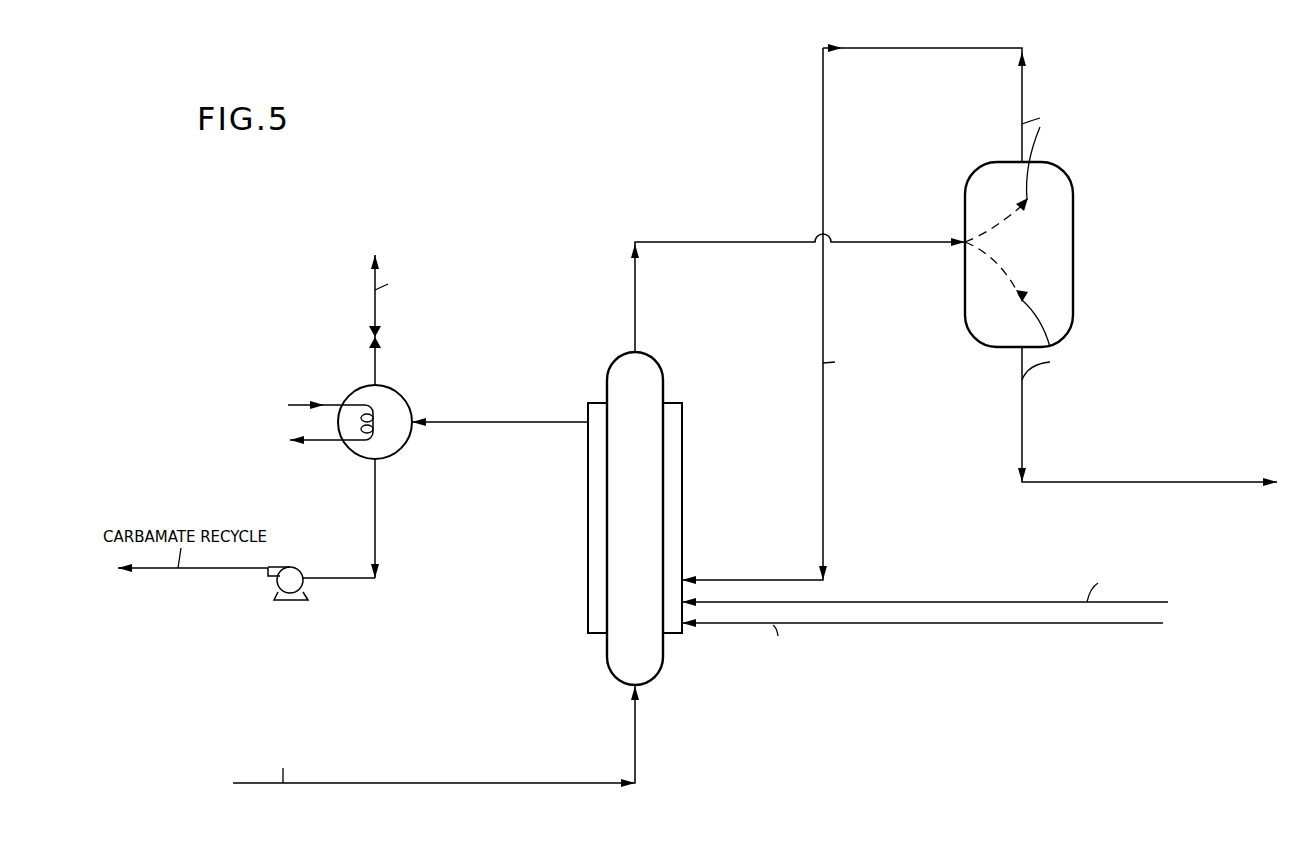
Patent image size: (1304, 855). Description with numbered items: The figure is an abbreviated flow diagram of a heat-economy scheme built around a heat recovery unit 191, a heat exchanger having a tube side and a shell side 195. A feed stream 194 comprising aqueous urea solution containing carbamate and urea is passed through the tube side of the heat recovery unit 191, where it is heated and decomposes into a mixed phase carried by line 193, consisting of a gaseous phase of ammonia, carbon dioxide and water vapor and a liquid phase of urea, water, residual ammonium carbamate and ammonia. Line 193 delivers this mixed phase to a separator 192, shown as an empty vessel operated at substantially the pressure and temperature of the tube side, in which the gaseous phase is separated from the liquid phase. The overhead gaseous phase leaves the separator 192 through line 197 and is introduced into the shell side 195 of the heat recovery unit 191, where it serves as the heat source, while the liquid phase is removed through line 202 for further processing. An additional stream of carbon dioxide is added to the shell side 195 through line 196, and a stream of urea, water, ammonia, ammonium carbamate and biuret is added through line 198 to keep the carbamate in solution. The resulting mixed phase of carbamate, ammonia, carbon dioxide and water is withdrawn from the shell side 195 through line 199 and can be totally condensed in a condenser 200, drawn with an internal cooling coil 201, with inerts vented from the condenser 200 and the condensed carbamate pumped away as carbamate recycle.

The heat recovery unit 191 is at (665, 660).
The separator 192 is at (1073, 280).
The mixed phase line 193 is at (734, 241).
The stream 194 is at (489, 780).
The shell side 195 is at (588, 530).
The CO2 line 196 is at (1008, 600).
The overhead gaseous phase line 197 is at (823, 458).
The line 198 is at (1043, 625).
The mixed phase stream line 199 is at (443, 424).
The condenser 200 is at (405, 396).
The cooling coil 201 is at (356, 402).
The liquid phase line 202 is at (1080, 482).